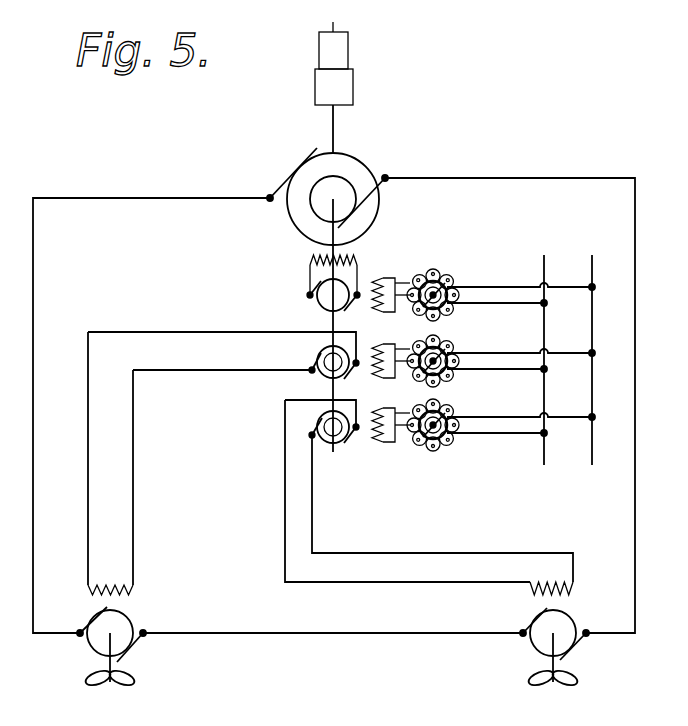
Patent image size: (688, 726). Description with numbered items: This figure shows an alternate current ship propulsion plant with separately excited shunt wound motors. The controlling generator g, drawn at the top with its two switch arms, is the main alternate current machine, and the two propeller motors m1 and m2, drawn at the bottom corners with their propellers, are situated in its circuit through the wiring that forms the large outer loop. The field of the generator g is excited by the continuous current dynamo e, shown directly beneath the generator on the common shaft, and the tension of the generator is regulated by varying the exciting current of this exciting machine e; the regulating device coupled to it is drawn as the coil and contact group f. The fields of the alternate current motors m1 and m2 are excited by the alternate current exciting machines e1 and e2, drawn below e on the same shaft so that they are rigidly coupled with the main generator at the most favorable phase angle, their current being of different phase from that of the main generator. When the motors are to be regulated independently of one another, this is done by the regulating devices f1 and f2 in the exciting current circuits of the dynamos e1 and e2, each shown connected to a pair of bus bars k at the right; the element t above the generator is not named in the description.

The thermostat t is at (357, 90).
The controlling generator g is at (332, 188).
The continuous current dynamo e is at (317, 283).
The alternate current exciting machine e1 is at (223, 355).
The alternate current exciting machine e2 is at (322, 421).
The regulator f is at (462, 284).
The regulator f1 is at (462, 350).
The regulator f2 is at (462, 414).
The bus bars k is at (545, 341).
The motor m1 is at (150, 622).
The motor m2 is at (528, 641).